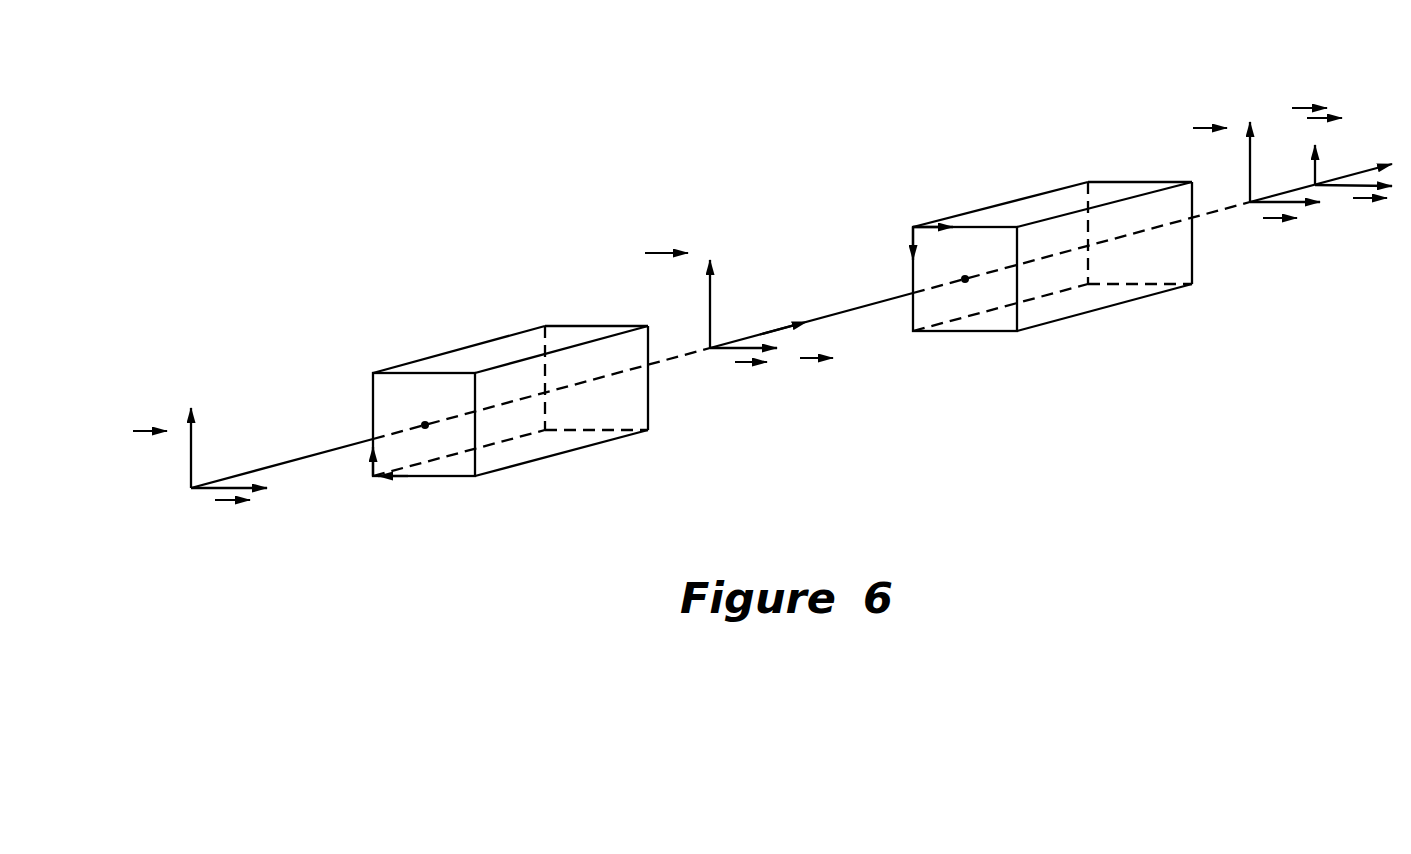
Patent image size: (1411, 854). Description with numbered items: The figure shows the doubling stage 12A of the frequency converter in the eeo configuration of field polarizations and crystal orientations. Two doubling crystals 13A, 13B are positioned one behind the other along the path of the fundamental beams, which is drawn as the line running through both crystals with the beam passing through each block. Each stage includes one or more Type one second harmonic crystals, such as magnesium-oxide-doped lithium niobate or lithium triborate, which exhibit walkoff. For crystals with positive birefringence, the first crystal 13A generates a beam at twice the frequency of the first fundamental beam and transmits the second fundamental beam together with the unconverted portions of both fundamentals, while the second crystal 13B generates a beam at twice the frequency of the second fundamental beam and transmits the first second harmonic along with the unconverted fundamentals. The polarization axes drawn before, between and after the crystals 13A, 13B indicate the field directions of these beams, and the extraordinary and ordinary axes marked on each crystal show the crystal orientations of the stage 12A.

The doubling crystal stage 12A is at (224, 93).
The first nonlinear crystal 13A is at (493, 419).
The second nonlinear crystal 13B is at (1033, 273).